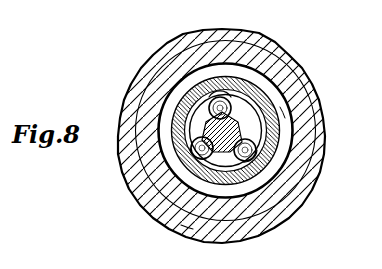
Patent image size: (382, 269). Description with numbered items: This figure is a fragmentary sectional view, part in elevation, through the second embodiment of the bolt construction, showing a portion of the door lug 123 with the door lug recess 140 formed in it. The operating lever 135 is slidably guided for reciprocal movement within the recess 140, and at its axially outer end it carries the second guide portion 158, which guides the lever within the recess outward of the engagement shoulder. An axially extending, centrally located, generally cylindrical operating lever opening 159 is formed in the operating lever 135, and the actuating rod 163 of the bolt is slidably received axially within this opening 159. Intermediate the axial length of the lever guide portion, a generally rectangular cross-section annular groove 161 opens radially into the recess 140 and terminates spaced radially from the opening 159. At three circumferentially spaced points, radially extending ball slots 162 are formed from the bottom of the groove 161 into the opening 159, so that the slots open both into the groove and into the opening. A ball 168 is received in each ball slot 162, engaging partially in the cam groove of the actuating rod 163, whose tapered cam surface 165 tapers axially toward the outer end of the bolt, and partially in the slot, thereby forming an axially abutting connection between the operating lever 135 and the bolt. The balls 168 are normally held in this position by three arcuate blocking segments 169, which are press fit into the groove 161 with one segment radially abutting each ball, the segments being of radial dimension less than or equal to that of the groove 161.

The door lug 123 is at (283, 62).
The operating lever 135 is at (187, 221).
The door lug recess 140 is at (287, 100).
The second guide portion 158 is at (171, 100).
The operating lever opening 159 is at (283, 115).
The annular groove 161 is at (172, 86).
The ball slots 162 is at (251, 44).
The actuating rod 163 is at (266, 128).
The tapered cam surface 165 is at (152, 212).
The ball 168 is at (216, 100).
The blocking segments 169 is at (178, 120).